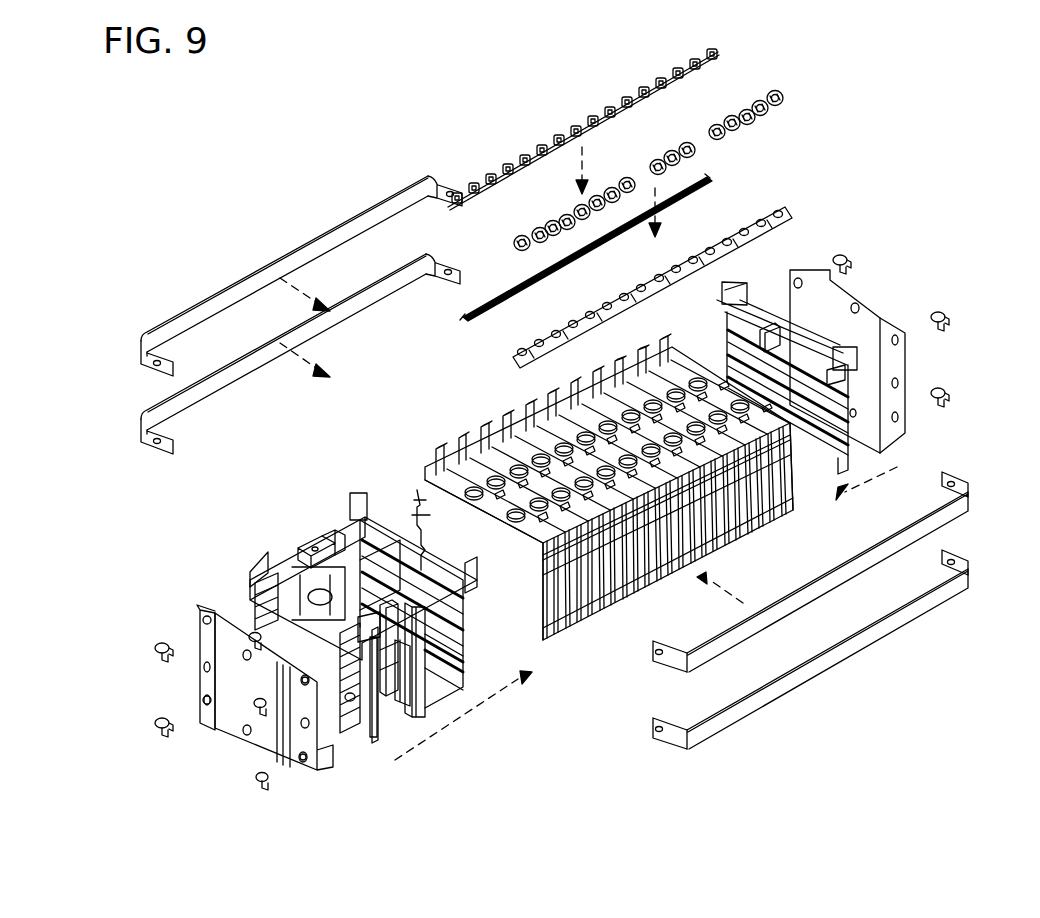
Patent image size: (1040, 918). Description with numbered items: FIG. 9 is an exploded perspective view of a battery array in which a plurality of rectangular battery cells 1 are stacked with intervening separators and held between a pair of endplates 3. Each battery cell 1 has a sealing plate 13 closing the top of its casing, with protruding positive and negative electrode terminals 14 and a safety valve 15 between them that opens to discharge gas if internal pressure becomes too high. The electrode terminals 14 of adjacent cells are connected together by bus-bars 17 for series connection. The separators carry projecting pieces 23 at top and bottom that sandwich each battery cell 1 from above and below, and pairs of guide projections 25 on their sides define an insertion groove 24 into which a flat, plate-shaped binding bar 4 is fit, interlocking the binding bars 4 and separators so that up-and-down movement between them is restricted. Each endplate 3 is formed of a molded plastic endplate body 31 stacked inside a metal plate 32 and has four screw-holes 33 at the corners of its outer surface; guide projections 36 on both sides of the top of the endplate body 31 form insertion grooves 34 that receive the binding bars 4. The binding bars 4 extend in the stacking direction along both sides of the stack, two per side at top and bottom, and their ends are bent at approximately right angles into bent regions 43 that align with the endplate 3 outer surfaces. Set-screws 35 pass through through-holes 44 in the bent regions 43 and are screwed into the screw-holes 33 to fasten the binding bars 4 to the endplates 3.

The rectangular battery cell 1 is at (626, 520).
The endplate 3 is at (558, 543).
The binding bar 4 is at (300, 257).
The sealing plate 13 is at (330, 555).
The electrode terminal 14 is at (425, 650).
The safety valve 15 is at (340, 538).
The bus-bar 17 is at (666, 240).
The projecting piece 23 is at (463, 655).
The insertion groove 24 is at (745, 455).
The guide projection 25 is at (770, 470).
The endplate body 31 is at (283, 700).
The metal plate 32 is at (207, 690).
The screw-hole 33 is at (205, 617).
The insertion groove 34 is at (382, 720).
The set-screw 35 is at (160, 723).
The guide projection 36 is at (388, 640).
The bent region 43 is at (452, 190).
The through-hole 44 is at (155, 362).